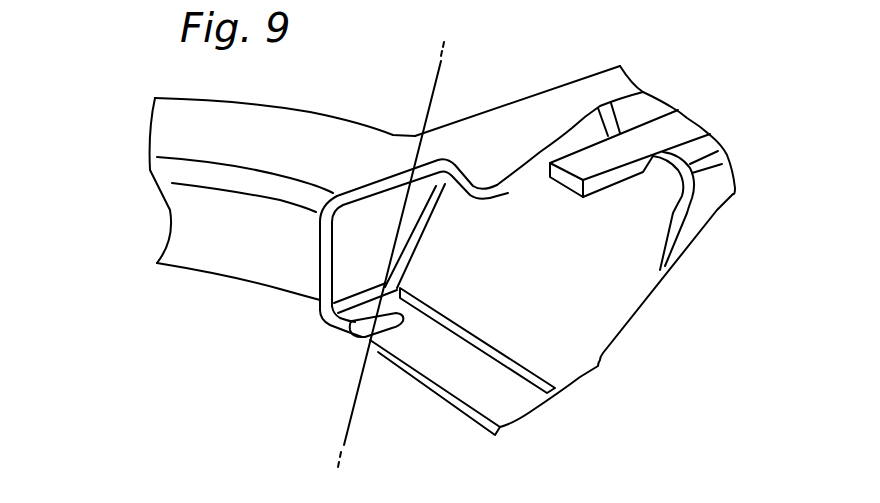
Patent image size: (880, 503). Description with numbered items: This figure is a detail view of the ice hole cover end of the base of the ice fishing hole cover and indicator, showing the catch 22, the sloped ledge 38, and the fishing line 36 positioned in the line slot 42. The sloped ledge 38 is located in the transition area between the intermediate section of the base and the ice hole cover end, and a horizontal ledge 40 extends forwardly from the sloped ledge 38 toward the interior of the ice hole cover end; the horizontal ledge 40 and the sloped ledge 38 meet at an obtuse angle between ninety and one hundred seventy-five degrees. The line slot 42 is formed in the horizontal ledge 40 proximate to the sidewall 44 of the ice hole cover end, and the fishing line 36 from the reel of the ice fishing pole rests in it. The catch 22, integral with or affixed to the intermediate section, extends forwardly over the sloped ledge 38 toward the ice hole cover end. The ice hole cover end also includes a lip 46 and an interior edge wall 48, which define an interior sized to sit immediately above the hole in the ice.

The catch 22 is at (600, 153).
The fishing line 36 is at (427, 100).
The sloped ledge 38 is at (587, 260).
The horizontal ledge 40 is at (463, 367).
The line slot 42 is at (363, 340).
The sidewall 44 is at (343, 250).
The lip 46 is at (170, 131).
The interior edge wall 48 is at (230, 236).